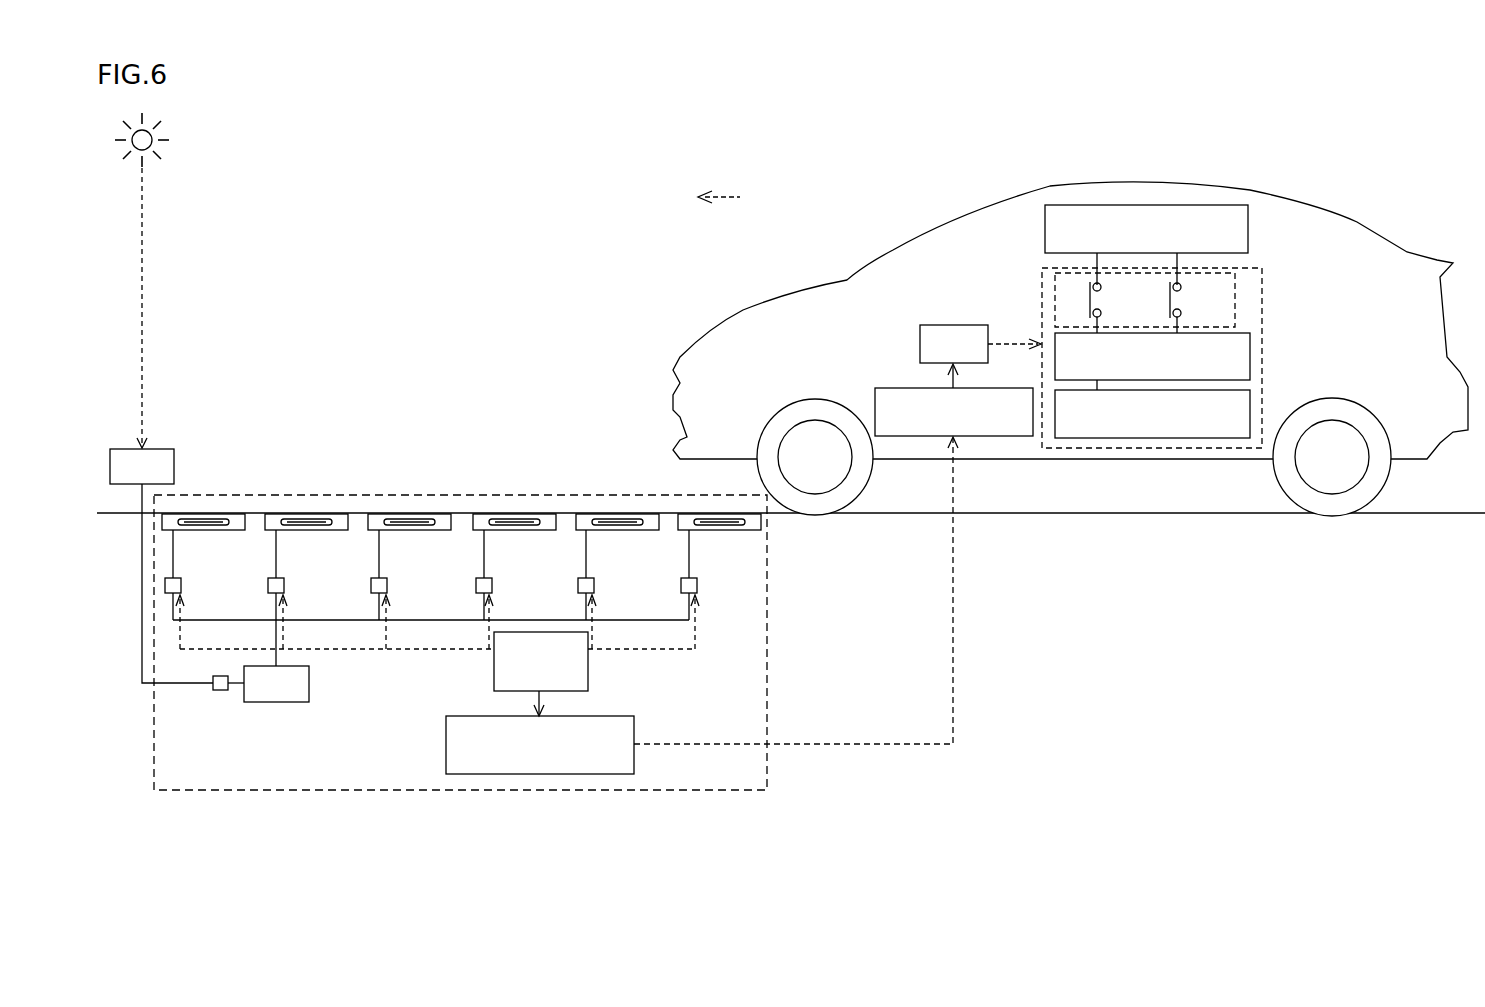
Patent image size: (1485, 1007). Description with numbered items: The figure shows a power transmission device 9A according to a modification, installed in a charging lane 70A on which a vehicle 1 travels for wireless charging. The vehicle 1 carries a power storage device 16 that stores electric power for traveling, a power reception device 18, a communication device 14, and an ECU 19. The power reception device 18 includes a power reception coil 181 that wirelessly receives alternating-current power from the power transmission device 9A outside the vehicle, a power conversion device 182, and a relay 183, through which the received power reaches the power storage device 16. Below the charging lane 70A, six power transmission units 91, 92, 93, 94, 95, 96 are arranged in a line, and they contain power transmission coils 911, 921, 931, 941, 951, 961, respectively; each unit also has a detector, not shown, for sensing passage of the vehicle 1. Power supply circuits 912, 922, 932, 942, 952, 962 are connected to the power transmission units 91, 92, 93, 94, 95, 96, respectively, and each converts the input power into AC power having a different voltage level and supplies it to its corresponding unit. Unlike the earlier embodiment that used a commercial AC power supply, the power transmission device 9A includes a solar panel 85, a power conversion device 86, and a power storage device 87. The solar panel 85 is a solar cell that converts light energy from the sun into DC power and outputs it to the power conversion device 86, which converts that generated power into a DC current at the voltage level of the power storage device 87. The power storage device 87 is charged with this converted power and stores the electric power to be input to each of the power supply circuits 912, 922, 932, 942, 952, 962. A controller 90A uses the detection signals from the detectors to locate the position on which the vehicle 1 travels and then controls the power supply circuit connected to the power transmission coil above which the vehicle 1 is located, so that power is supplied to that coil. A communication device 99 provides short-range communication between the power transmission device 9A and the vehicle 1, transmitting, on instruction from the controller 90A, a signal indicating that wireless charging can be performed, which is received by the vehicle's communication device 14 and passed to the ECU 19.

The vehicle 1 is at (1354, 224).
The communication device 14 is at (992, 388).
The power storage device 16 is at (1252, 229).
The power reception device 18 is at (1262, 278).
The electronic control unit (ECU) 19 is at (963, 325).
The power reception coil 181 is at (1250, 410).
The power conversion device 182 is at (1250, 357).
The relay 183 is at (1235, 298).
The power transmission device 9A is at (464, 495).
The charging lane 70A is at (124, 520).
The solar panel 85 is at (147, 449).
The power conversion device 86 is at (220, 690).
The power storage device 87 is at (282, 702).
The controller 90A is at (588, 676).
The power transmission unit 91 is at (752, 531).
The power transmission coil 911 is at (710, 531).
The power supply circuit 912 is at (697, 585).
The power transmission unit 92 is at (650, 531).
The power transmission coil 921 is at (607, 531).
The power supply circuit 922 is at (594, 585).
The power transmission unit 93 is at (547, 531).
The power transmission coil 931 is at (503, 531).
The power supply circuit 932 is at (492, 585).
The power transmission unit 94 is at (444, 531).
The power transmission coil 941 is at (400, 531).
The power supply circuit 942 is at (387, 585).
The power transmission unit 95 is at (341, 531).
The power transmission coil 951 is at (297, 531).
The power supply circuit 952 is at (284, 585).
The power transmission unit 96 is at (238, 531).
The power transmission coil 961 is at (194, 531).
The power supply circuit 962 is at (181, 585).
The communication device 99 is at (634, 764).